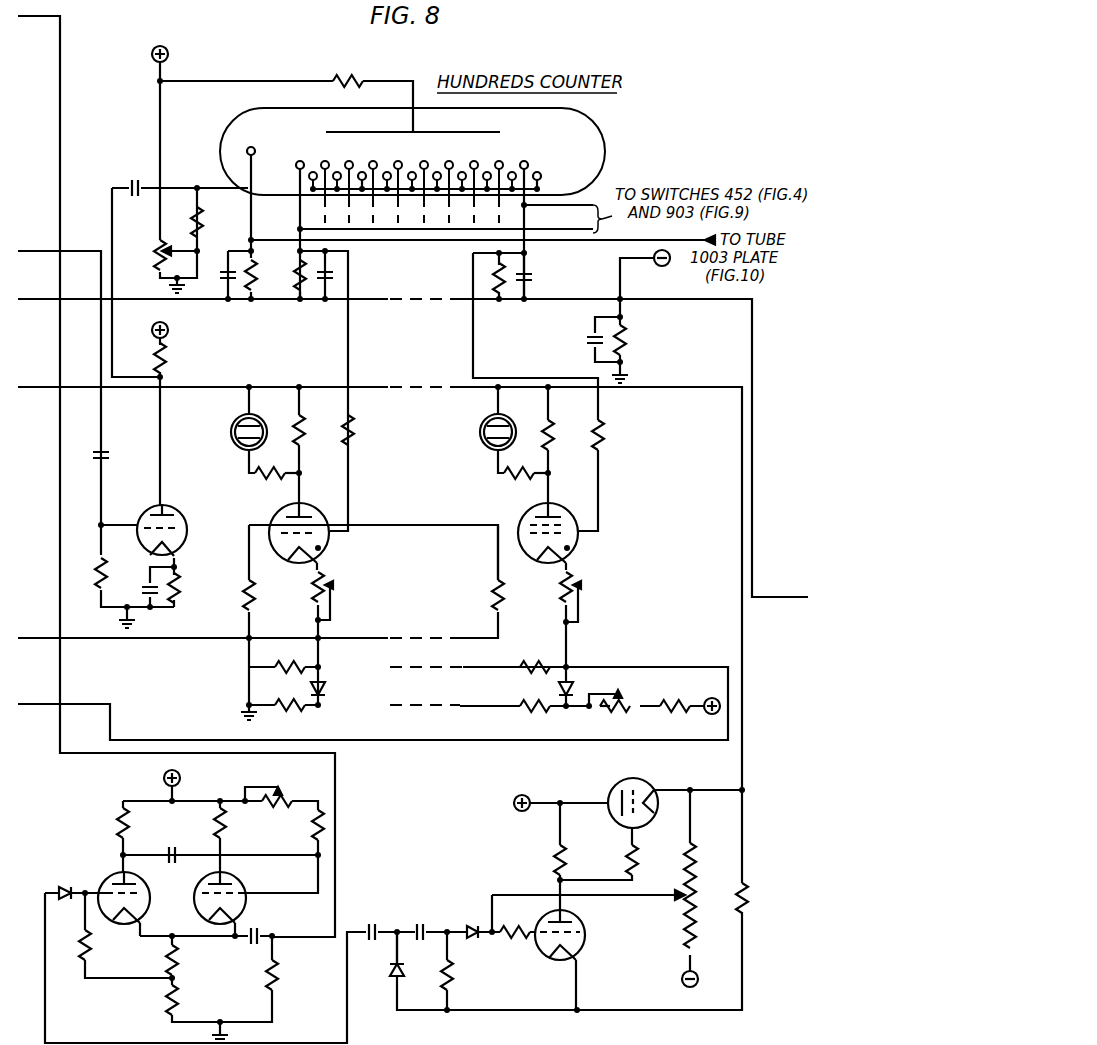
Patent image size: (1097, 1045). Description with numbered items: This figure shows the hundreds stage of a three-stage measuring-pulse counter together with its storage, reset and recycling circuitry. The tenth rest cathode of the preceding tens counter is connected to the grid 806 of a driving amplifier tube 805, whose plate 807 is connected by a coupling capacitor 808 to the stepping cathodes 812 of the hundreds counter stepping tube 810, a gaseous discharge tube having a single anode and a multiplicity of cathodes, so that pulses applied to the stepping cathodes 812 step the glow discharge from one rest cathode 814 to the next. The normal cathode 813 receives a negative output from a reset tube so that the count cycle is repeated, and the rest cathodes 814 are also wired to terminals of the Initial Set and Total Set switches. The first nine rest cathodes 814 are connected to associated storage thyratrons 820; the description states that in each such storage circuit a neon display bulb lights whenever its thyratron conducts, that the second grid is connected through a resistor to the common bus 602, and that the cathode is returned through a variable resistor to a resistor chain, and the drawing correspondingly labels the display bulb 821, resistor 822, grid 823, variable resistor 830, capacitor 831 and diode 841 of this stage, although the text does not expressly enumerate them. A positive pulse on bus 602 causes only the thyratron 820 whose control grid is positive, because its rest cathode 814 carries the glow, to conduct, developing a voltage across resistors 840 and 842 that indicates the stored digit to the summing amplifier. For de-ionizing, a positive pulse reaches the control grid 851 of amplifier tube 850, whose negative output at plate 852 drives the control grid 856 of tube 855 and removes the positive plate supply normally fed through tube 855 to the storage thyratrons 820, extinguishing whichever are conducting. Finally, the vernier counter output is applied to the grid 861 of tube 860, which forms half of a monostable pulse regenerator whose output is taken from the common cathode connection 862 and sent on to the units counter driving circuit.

The common bus 602 is at (36, 637).
The driving amplifier tube 805 is at (185, 521).
The grid 806 is at (178, 539).
The plate 807 is at (185, 525).
The coupling capacitor 808 is at (134, 181).
The hundreds counter stepping tube 810 is at (602, 141).
The stepping cathodes 812 is at (362, 167).
The normal cathode 813 is at (251, 146).
The rest cathodes 814 is at (299, 160).
The storage thyratrons 820 is at (437, 519).
The indicator lamp 821 is at (235, 439).
The resistor 822 is at (275, 521).
The grid of tube 820 823 is at (335, 535).
The potentiometer 830 is at (635, 343).
The capacitor 831 is at (590, 347).
The resistors 840 is at (292, 712).
The diode 841 is at (329, 686).
The resistors 842 is at (275, 662).
The amplifier tube 850 is at (583, 940).
The control grid 851 is at (578, 935).
The plate 852 is at (573, 921).
The tube 855 is at (623, 801).
The control grid 856 is at (627, 820).
The tube 860 is at (147, 885).
The grid 861 is at (108, 886).
The common cathode connection 862 is at (188, 934).